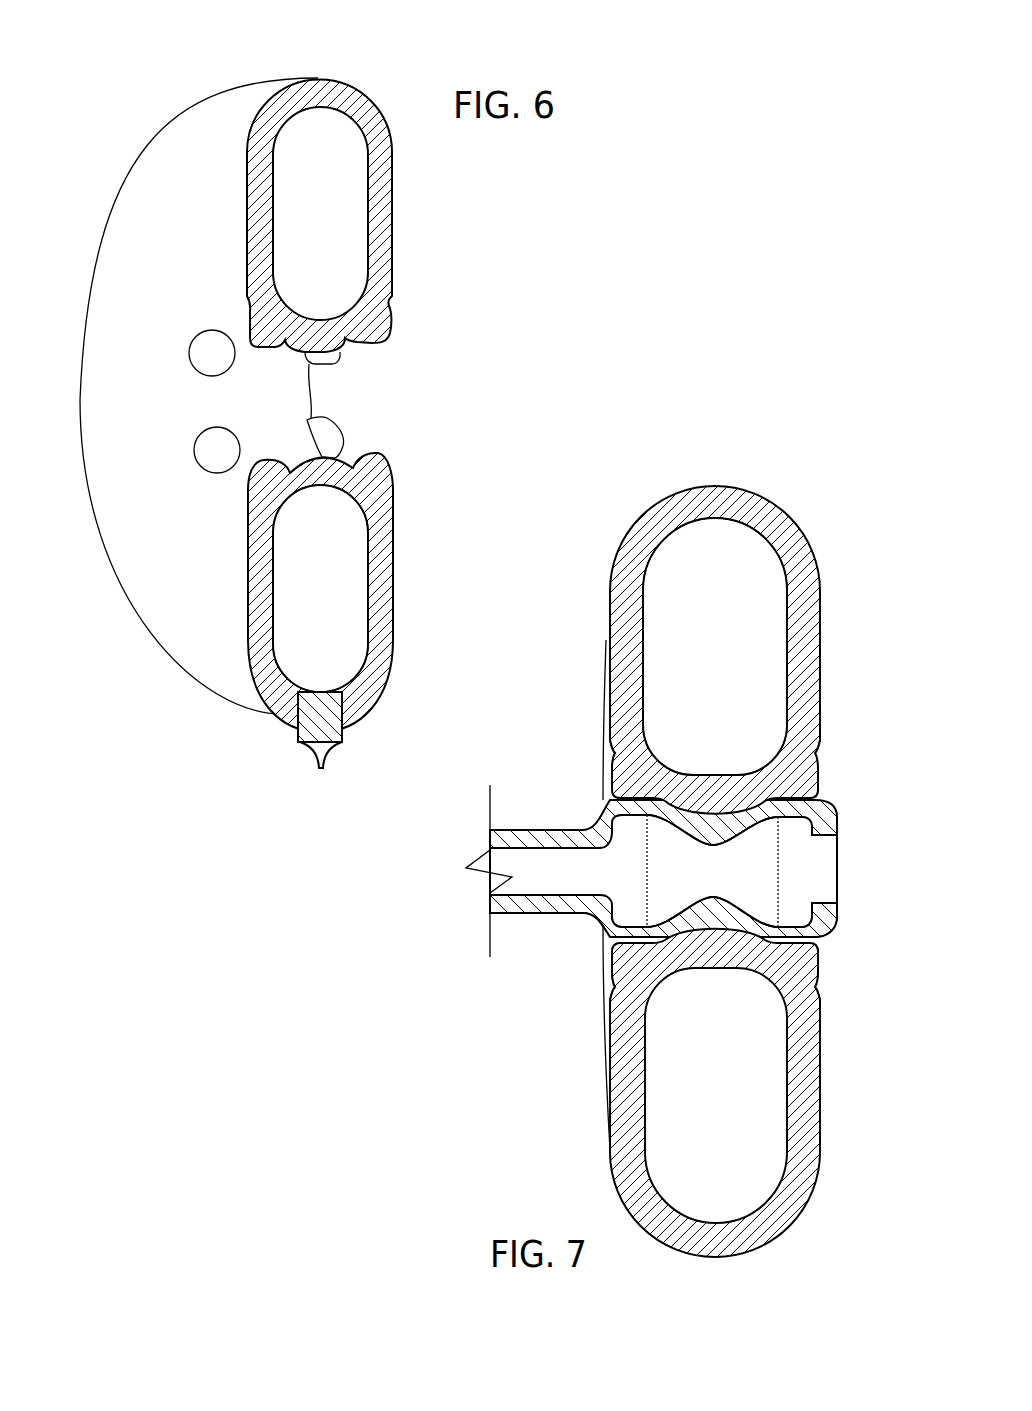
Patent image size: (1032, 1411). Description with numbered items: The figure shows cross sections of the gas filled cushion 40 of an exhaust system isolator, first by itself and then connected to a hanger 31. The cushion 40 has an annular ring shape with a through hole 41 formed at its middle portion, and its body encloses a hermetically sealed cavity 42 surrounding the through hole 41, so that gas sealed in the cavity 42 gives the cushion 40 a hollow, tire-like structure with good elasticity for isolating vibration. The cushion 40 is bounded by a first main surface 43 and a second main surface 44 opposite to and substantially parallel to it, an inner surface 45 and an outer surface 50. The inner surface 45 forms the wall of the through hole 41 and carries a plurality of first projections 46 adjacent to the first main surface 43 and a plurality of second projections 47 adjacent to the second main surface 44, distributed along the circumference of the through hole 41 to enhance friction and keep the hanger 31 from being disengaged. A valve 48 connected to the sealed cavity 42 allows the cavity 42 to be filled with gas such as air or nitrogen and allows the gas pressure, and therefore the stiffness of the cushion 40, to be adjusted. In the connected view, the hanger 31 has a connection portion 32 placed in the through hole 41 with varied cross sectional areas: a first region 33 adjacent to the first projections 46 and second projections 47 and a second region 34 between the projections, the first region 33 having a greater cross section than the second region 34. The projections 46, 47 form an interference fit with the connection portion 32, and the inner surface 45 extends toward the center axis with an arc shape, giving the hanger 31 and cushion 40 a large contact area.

In FIG. 7, the hanger 31 is at (543, 910).
In FIG. 7, the connection portion 32 is at (723, 830).
In FIG. 7, the first region 33 is at (607, 930).
In FIG. 7, the second region 34 is at (717, 913).
In FIG. 6, the cushion 40 is at (117, 63).
In FIG. 7, the cushion 40 is at (778, 500).
In FIG. 6, the through hole 41 is at (357, 372).
In FIG. 7, the through hole 41 is at (830, 800).
In FIG. 6, the sealed cavity 42 is at (331, 622).
In FIG. 7, the sealed cavity 42 is at (743, 563).
In FIG. 6, the first main surface 43 is at (147, 213).
In FIG. 7, the first main surface 43 is at (608, 643).
In FIG. 6, the second main surface 44 is at (393, 208).
In FIG. 7, the second main surface 44 is at (822, 643).
In FIG. 6, the inner surface 45 is at (352, 573).
In FIG. 6, the first projections 46 is at (205, 352).
In FIG. 7, the first projections 46 is at (627, 783).
In FIG. 6, the second projections 47 is at (305, 357).
In FIG. 7, the second projections 47 is at (817, 783).
In FIG. 6, the valve 48 is at (302, 748).
In FIG. 6, the outer surface 50 is at (349, 183).
In FIG. 7, the outer surface 50 is at (746, 615).